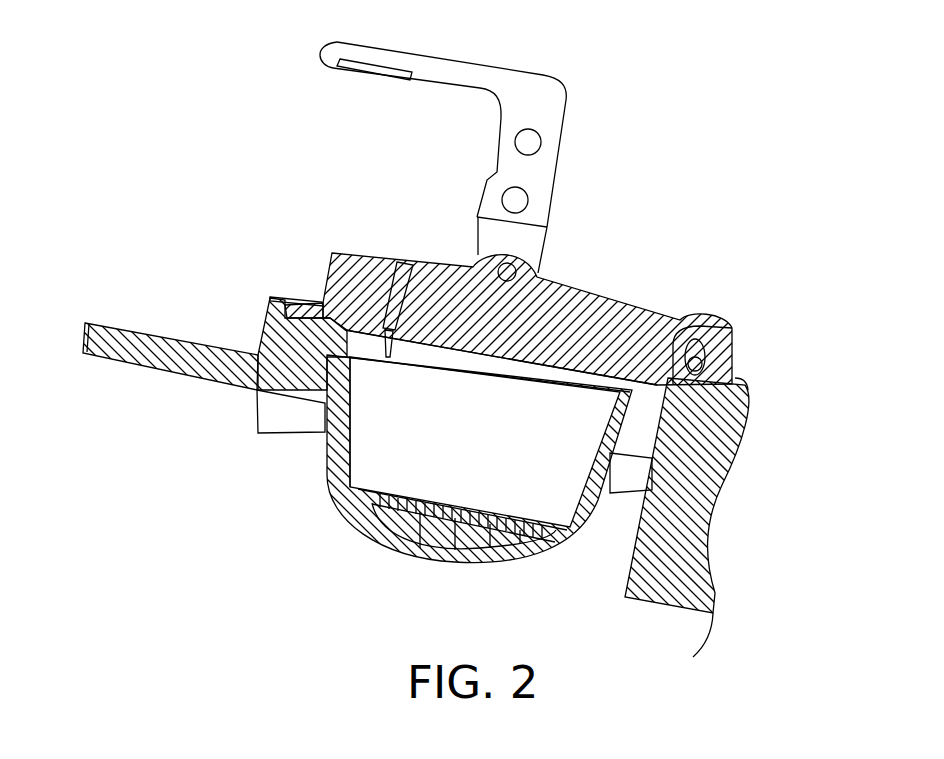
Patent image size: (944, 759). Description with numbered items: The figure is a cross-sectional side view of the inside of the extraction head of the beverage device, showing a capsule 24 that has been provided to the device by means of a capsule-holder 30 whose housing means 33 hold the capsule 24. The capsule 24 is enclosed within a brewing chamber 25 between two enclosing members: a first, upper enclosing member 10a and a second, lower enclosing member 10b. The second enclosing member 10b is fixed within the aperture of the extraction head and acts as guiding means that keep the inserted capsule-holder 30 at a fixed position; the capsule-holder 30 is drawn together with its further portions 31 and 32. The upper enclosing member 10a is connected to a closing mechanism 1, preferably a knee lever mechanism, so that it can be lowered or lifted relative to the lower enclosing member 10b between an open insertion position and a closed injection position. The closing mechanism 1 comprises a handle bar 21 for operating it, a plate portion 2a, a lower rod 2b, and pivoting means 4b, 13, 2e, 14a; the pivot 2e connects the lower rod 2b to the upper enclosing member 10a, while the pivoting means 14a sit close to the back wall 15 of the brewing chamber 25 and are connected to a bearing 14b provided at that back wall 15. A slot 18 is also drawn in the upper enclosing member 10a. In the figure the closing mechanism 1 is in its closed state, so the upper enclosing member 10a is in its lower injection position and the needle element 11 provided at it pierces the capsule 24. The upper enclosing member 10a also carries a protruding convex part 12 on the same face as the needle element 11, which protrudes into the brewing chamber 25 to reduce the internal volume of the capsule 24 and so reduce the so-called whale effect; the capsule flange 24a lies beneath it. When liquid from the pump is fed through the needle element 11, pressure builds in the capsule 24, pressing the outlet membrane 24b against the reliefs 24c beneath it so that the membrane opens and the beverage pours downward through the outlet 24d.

The closing mechanism 1 is at (545, 165).
The handle bar 21 is at (492, 78).
The pivoting means 4b is at (522, 137).
The pivoting means 13 is at (520, 200).
The plate portion 2a is at (505, 165).
The lower rod 2b is at (528, 245).
The pivot 2e is at (503, 262).
The first enclosing member 10a is at (360, 270).
The needle element 11 is at (322, 300).
The slot 18 is at (397, 270).
The protruding convex part 12 is at (622, 318).
The pivoting means 14a is at (705, 326).
The bearing 14b is at (720, 364).
The flange 24a is at (438, 285).
The back wall 15 is at (705, 460).
The capsule-holder 30 is at (303, 380).
The body top 31 is at (275, 337).
The arm 32 is at (115, 338).
The second enclosing member 10b is at (268, 407).
The capsule 24 is at (362, 460).
The housing means 33 is at (334, 425).
The brewing chamber 25 is at (597, 505).
The outlet membrane 24b is at (425, 545).
The reliefs 24c is at (445, 560).
The outlet 24d is at (455, 560).